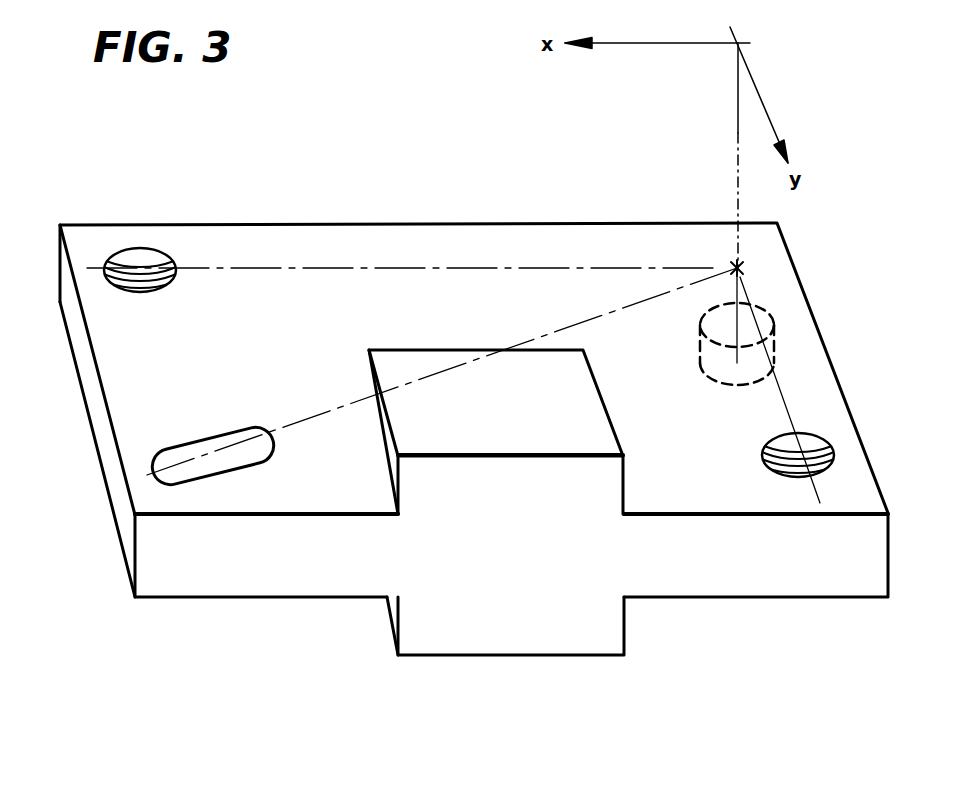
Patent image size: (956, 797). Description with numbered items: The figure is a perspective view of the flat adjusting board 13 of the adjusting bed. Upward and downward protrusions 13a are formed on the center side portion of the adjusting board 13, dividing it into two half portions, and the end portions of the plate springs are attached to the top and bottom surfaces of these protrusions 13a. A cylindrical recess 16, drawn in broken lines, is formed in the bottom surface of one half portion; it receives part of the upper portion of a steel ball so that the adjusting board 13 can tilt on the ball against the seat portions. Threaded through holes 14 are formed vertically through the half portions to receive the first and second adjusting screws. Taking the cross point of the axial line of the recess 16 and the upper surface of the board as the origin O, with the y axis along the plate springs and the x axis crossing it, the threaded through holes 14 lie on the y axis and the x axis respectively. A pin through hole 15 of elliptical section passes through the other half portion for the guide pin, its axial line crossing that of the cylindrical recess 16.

The adjusting board 13 is at (307, 565).
The upward and downward protrusions 13a is at (598, 478).
The threaded through holes 14 is at (165, 252).
The pin through hole 15 is at (160, 477).
The cylindrical recess 16 is at (813, 316).
The origin O is at (742, 264).